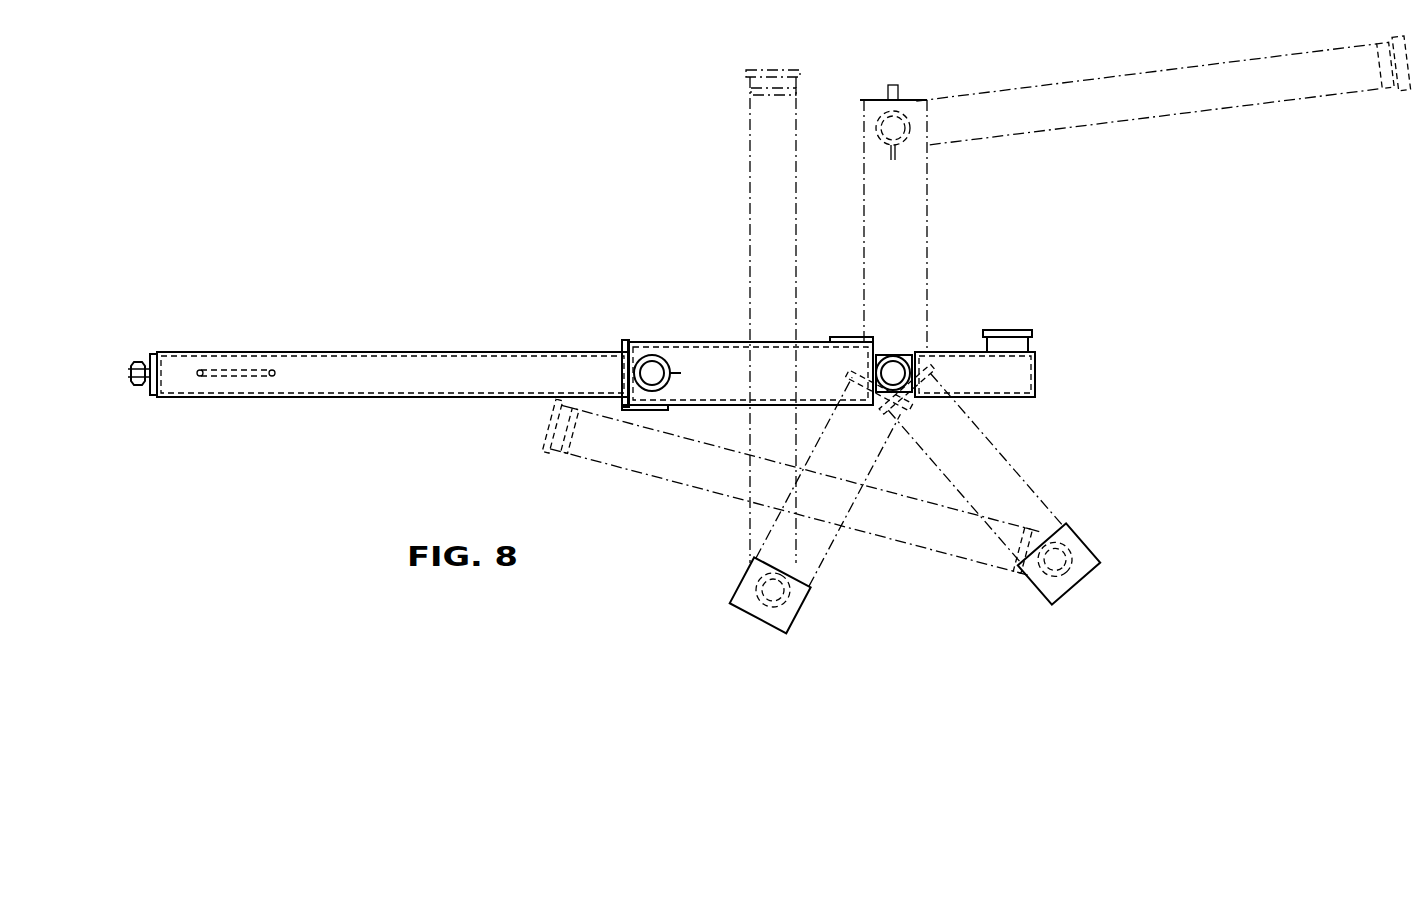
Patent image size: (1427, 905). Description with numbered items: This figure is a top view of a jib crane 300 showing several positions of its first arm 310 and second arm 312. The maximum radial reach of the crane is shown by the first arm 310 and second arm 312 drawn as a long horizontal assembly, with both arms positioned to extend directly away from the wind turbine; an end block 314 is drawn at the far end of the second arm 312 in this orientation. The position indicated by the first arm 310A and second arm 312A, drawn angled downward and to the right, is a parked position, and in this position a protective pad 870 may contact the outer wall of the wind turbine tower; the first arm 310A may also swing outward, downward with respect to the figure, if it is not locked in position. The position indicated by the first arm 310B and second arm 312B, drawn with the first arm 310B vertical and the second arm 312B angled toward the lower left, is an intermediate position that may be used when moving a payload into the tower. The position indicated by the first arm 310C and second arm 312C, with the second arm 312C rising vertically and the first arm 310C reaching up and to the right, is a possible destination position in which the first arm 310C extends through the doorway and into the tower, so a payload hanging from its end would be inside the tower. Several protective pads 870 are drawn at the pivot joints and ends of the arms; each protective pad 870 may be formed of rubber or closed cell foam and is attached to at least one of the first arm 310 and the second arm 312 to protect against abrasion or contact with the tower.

The jib crane 300 is at (507, 171).
The first arm 310 is at (400, 387).
The first arm 310A is at (885, 543).
The first arm 310B is at (750, 113).
The first arm 310C is at (1237, 102).
The second arm 312 is at (742, 387).
The second arm 312A is at (985, 477).
The second arm 312B is at (813, 552).
The second arm 312C is at (890, 222).
The end block 314 is at (1018, 368).
The protective pad 870 is at (858, 120).